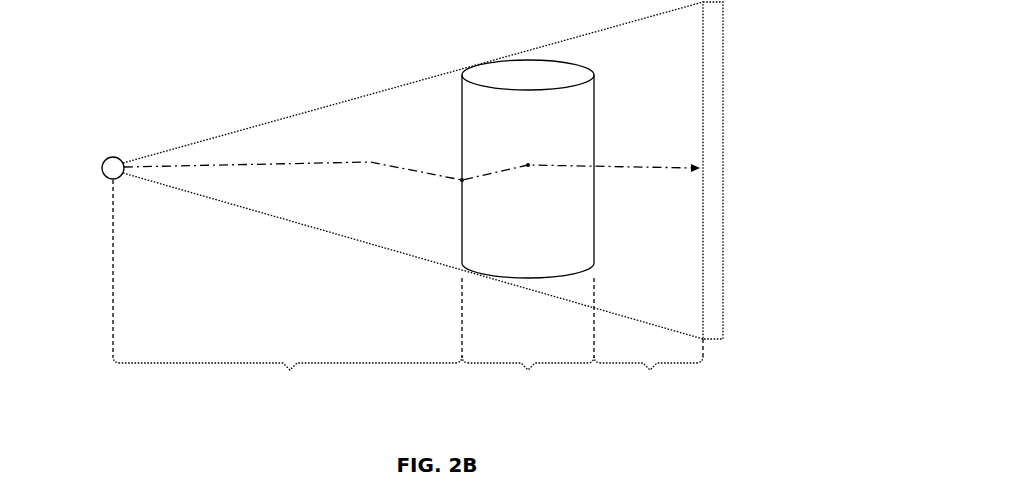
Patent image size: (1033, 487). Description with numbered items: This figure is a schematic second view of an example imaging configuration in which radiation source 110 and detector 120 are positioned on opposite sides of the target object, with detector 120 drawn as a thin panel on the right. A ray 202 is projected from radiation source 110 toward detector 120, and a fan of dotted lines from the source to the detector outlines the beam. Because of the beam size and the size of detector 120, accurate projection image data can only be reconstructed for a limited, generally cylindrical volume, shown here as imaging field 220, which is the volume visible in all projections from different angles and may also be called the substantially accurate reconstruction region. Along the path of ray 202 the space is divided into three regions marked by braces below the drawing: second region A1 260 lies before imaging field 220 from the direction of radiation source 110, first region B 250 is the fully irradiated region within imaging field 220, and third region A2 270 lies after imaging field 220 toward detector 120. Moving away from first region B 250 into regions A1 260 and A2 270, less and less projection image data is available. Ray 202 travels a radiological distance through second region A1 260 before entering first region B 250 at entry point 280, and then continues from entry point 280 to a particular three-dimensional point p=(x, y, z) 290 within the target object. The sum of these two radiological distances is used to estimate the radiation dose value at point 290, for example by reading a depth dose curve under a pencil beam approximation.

The radiation source 110 is at (102, 168).
The detector 120 is at (718, 48).
The ray 202 is at (309, 153).
The imaging field 220 is at (528, 169).
The first region B 250 is at (528, 346).
The second region A1 260 is at (287, 297).
The third region A2 270 is at (648, 377).
The entry point 280 is at (458, 182).
The point p=(x, y, z) 290 is at (528, 168).